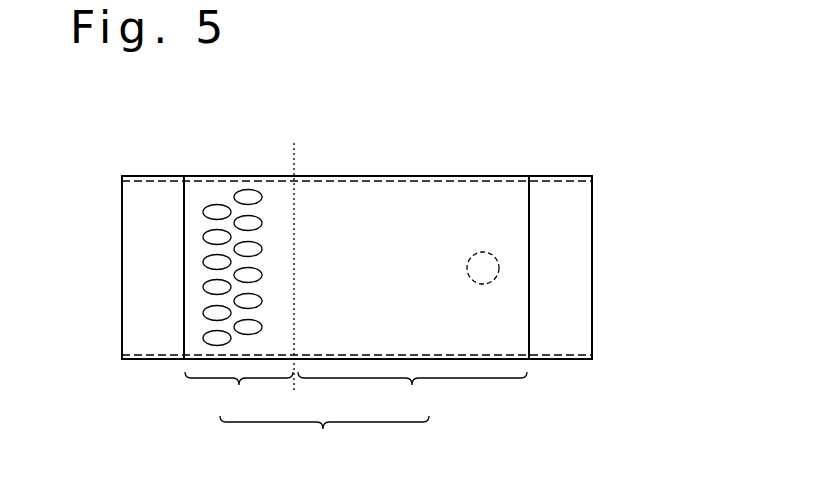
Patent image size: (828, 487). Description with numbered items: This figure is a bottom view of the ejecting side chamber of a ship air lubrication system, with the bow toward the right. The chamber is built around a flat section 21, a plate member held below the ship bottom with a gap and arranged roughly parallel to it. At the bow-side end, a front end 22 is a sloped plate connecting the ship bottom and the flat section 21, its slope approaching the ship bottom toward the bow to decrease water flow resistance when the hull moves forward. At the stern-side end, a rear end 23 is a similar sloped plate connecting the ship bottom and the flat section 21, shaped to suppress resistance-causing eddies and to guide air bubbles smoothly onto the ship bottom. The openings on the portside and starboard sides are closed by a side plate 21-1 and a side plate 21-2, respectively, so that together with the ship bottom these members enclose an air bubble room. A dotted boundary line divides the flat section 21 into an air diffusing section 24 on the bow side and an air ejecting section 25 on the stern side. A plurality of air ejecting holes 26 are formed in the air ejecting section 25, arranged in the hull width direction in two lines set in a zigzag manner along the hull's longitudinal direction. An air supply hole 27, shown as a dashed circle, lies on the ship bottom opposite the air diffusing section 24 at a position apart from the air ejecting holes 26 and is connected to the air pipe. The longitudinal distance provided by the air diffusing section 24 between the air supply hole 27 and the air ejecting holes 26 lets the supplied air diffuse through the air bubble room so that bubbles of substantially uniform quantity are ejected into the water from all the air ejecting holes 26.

The flat section 21 is at (324, 435).
The side plate 21-1 is at (565, 360).
The side plate 21-2 is at (565, 178).
The front end 22 is at (590, 232).
The rear end 23 is at (127, 235).
The air diffusing section 24 is at (412, 393).
The air ejecting section 25 is at (239, 393).
The air ejecting holes 26 is at (248, 194).
The air supply hole 27 is at (486, 252).